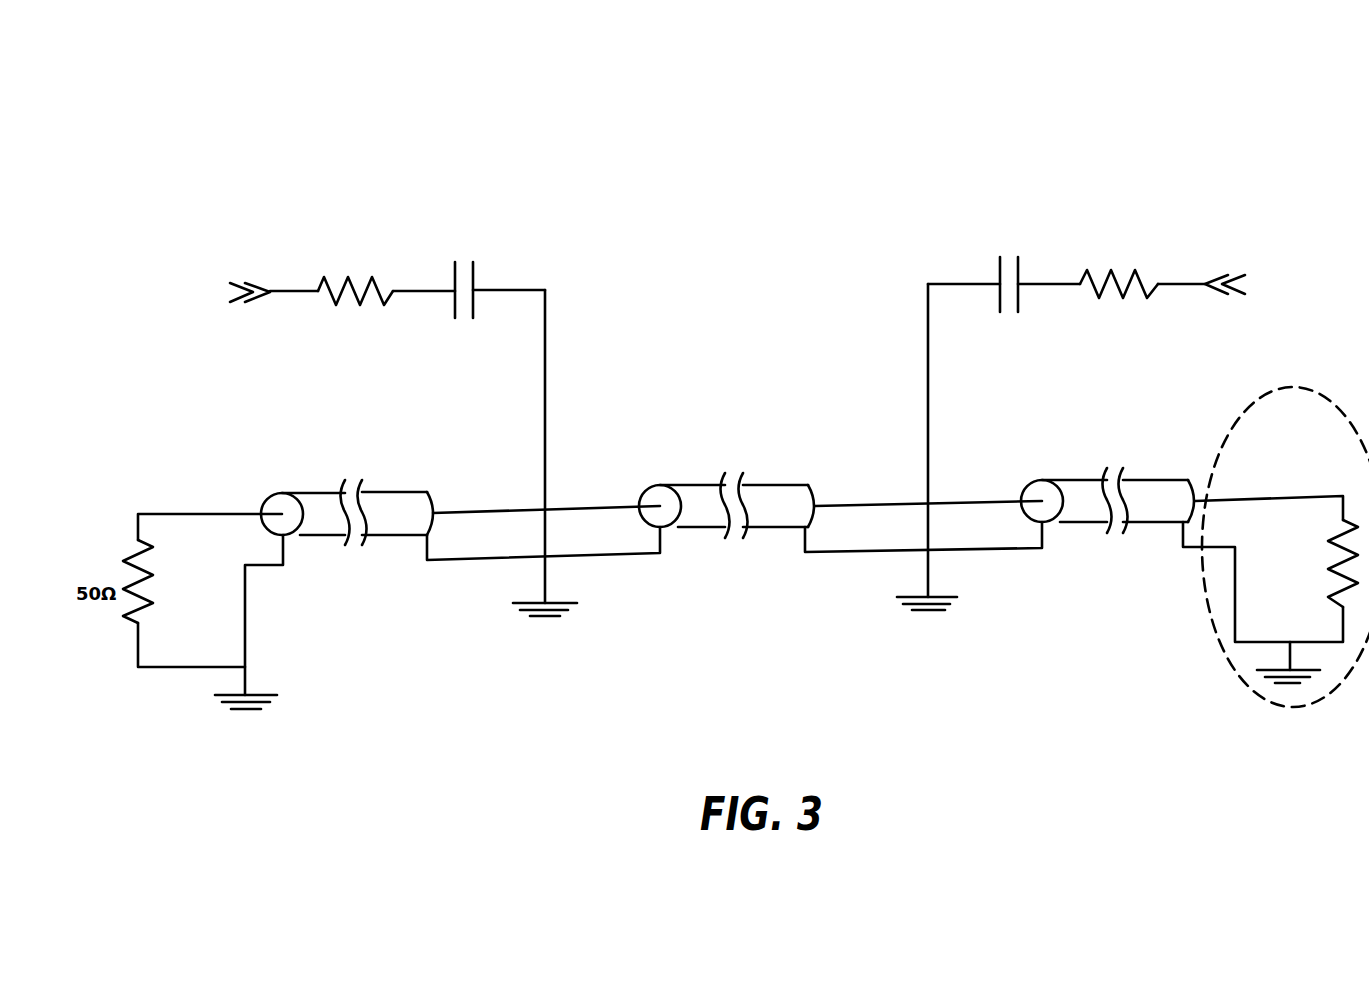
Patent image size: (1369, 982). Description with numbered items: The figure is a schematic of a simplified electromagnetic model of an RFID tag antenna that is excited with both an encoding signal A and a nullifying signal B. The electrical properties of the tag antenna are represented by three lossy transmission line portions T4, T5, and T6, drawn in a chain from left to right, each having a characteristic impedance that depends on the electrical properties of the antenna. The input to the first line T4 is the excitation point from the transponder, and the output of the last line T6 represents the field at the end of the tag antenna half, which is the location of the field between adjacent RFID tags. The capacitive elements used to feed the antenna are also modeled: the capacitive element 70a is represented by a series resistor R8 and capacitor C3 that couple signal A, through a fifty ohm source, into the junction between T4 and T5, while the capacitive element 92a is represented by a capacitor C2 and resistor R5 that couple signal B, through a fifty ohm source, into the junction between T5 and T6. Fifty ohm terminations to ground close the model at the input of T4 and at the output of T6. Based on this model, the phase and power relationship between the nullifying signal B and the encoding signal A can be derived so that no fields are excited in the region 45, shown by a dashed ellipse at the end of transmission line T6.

The capacitive element 70a is at (437, 203).
The capacitive element 92a is at (1061, 205).
The region 45 is at (1298, 381).
The lossy transmission line portion T4 is at (355, 461).
The lossy transmission line portion T5 is at (732, 455).
The lossy transmission line portion T6 is at (1112, 450).
The resistor R8 is at (355, 285).
The capacitor C3 is at (468, 290).
The capacitor C2 is at (1017, 283).
The resistor R5 is at (1119, 279).